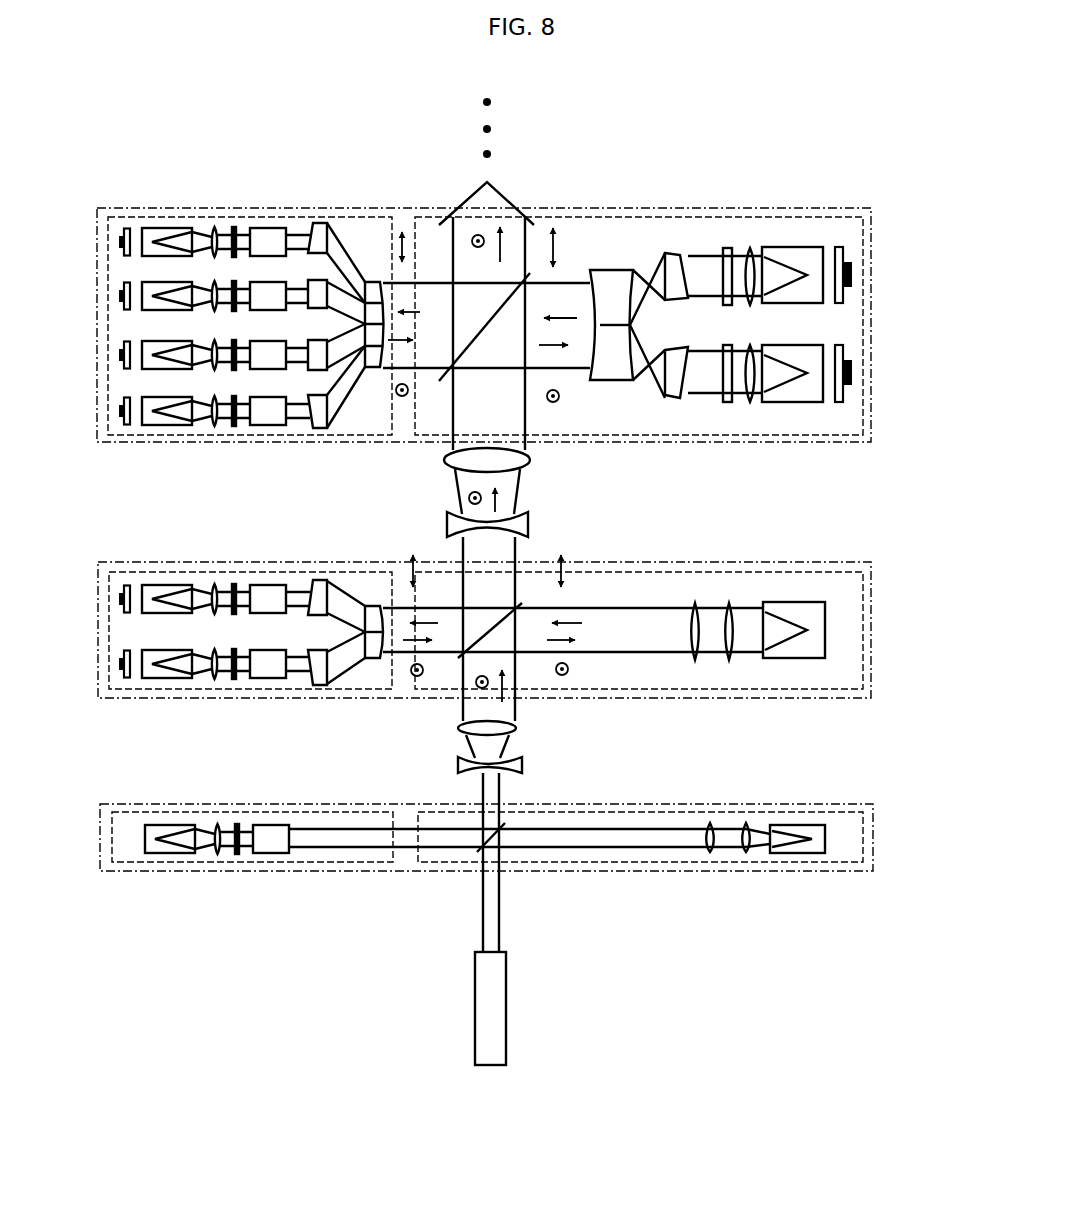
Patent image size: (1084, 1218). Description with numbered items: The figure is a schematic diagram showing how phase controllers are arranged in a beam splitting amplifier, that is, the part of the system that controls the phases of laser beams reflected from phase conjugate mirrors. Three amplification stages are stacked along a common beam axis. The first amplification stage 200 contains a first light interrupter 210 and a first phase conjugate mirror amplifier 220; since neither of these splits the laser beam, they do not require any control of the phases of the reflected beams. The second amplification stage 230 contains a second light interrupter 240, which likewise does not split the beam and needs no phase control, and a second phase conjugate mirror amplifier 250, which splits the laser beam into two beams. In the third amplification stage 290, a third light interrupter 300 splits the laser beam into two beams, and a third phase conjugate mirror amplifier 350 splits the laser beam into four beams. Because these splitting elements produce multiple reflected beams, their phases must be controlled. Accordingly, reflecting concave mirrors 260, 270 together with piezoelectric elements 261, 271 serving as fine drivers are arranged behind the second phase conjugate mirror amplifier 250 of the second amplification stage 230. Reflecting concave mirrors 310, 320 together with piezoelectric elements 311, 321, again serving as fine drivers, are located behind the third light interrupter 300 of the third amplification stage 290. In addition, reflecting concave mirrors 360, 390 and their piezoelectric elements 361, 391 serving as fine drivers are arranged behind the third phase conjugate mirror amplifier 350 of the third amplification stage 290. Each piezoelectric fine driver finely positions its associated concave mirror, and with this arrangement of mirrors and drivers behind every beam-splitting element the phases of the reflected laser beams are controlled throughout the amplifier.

The first amplification stage 200 is at (558, 805).
The first light interrupter 210 is at (613, 811).
The first phase conjugate mirror amplifier 220 is at (272, 812).
The second amplification stage 230 is at (593, 561).
The second light interrupter 240 is at (645, 572).
The second phase conjugate mirror amplifier 250 is at (272, 571).
The reflecting concave mirror 260 is at (121, 678).
The piezoelectric element 261 is at (131, 678).
The reflecting concave mirror 270 is at (121, 585).
The piezoelectric element 271 is at (131, 585).
The third amplification stage 290 is at (590, 207).
The third light interrupter 300 is at (660, 216).
The reflecting concave mirror 310 is at (838, 403).
The piezoelectric element 311 is at (848, 386).
The reflecting concave mirror 320 is at (838, 246).
The piezoelectric element 321 is at (848, 261).
The third phase conjugate mirror amplifier 350 is at (272, 215).
The reflecting concave mirror 360 is at (121, 426).
The piezoelectric element 361 is at (131, 425).
The reflecting concave mirror 390 is at (120, 227).
The piezoelectric element 391 is at (131, 228).